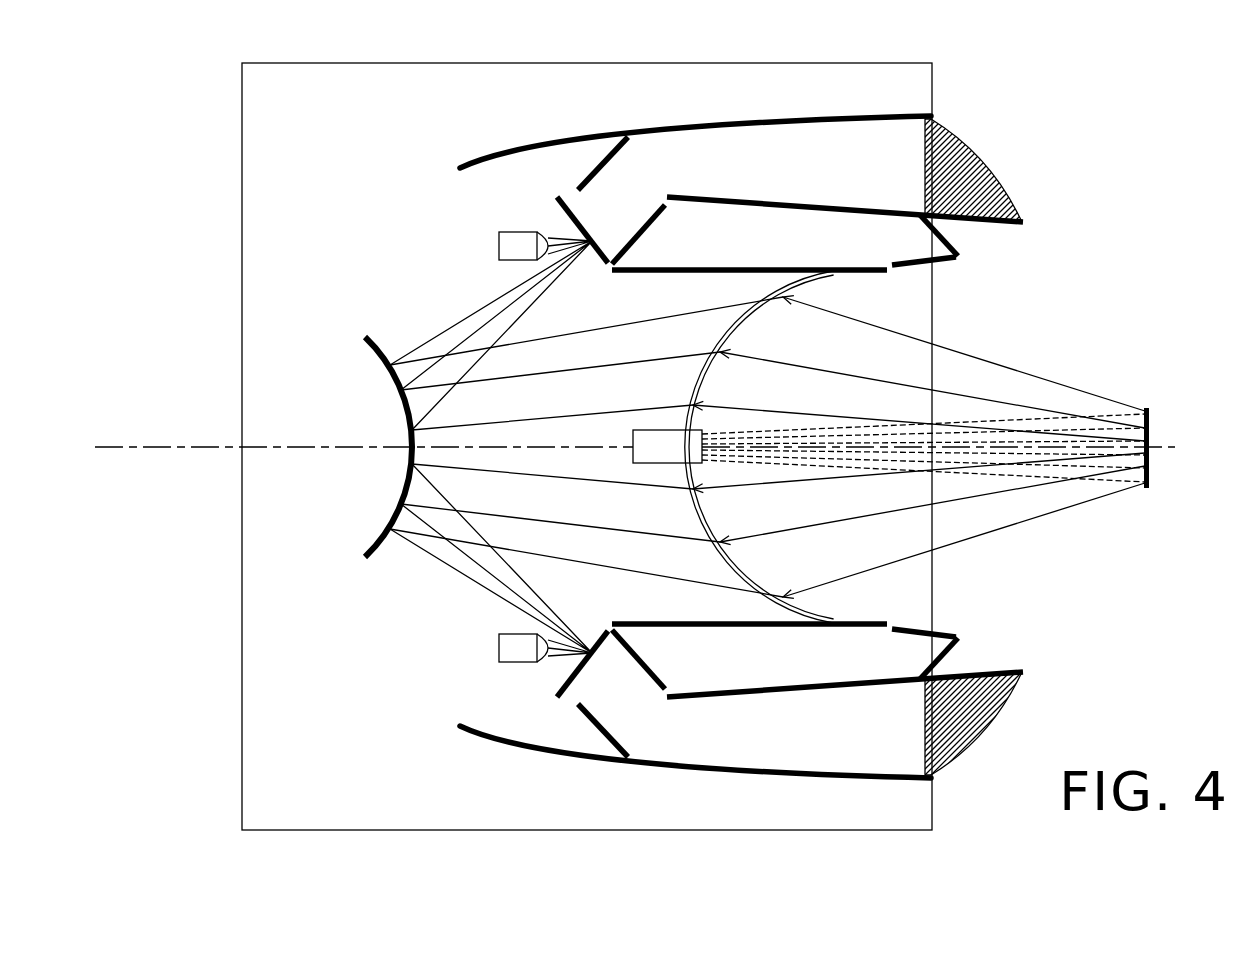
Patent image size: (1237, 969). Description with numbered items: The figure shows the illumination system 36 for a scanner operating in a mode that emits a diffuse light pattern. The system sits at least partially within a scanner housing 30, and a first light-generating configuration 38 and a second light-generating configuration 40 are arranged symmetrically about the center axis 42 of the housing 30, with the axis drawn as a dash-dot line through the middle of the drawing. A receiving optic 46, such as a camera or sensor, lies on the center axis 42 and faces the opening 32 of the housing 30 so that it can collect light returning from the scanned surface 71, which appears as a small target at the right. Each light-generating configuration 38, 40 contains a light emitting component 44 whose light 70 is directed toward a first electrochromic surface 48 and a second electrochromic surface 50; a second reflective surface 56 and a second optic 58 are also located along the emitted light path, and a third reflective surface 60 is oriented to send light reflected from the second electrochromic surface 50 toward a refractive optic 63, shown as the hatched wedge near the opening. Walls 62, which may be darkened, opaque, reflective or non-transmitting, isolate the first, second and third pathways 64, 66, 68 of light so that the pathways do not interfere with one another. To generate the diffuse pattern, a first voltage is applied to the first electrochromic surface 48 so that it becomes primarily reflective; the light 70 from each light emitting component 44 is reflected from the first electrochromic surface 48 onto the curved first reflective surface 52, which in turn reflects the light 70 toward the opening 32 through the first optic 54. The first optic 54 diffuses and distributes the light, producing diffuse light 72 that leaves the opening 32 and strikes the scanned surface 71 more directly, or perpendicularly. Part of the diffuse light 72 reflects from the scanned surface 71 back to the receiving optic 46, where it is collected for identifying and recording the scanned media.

The scanner housing 30 is at (315, 62).
The opening 32 is at (1060, 353).
The illumination system 36 is at (569, 446).
The first light-generating configuration 38 is at (486, 207).
The second light-generating configuration 40 is at (486, 690).
The center axis 42 is at (333, 450).
The light emitting component 44 is at (497, 240).
The receiving optic 46 is at (636, 455).
The first electrochromic surface 48 is at (591, 236).
The second electrochromic surface 50 is at (638, 236).
The first reflective surface 52 is at (392, 383).
The first optic 54 is at (741, 330).
The second reflective surface 56 is at (950, 236).
The second optic 58 is at (927, 268).
The third reflective surface 60 is at (613, 157).
The walls 62 is at (804, 126).
The refractive optic 63 is at (985, 162).
The first pathway 64 is at (641, 399).
The second pathway 66 is at (711, 249).
The third pathway 68 is at (721, 176).
The light 70 is at (558, 238).
The scanned surface 71 is at (1150, 416).
The diffuse light 72 is at (958, 352).